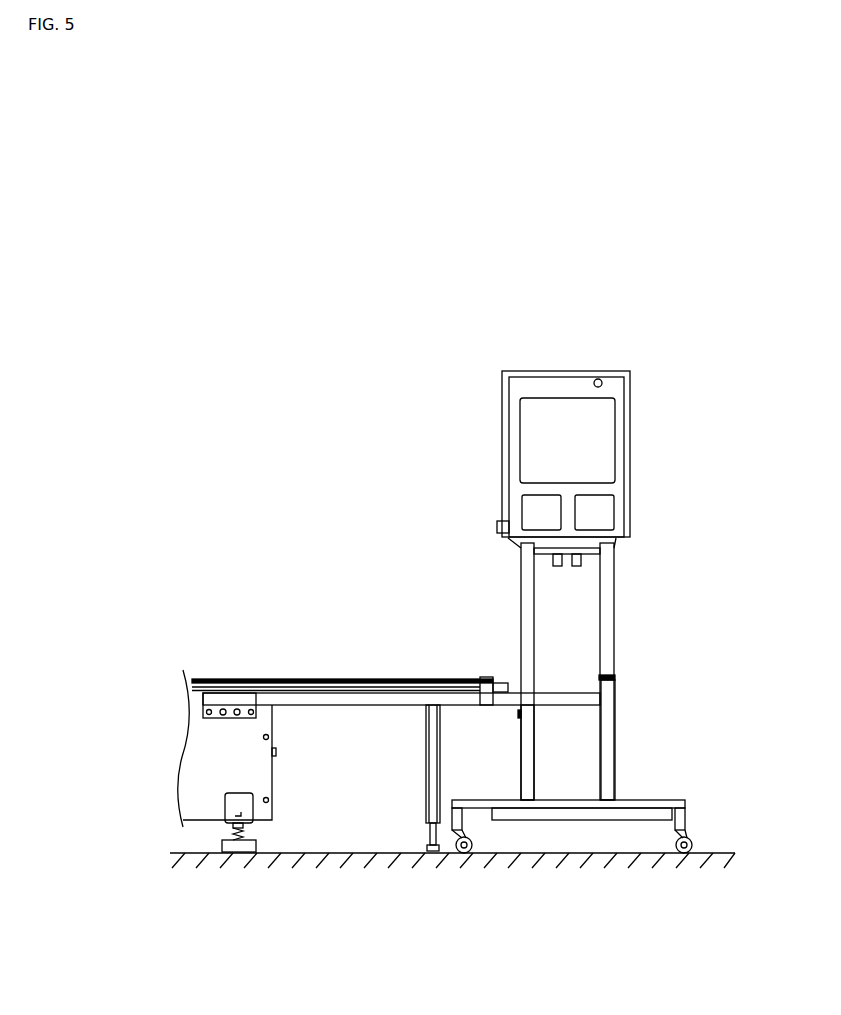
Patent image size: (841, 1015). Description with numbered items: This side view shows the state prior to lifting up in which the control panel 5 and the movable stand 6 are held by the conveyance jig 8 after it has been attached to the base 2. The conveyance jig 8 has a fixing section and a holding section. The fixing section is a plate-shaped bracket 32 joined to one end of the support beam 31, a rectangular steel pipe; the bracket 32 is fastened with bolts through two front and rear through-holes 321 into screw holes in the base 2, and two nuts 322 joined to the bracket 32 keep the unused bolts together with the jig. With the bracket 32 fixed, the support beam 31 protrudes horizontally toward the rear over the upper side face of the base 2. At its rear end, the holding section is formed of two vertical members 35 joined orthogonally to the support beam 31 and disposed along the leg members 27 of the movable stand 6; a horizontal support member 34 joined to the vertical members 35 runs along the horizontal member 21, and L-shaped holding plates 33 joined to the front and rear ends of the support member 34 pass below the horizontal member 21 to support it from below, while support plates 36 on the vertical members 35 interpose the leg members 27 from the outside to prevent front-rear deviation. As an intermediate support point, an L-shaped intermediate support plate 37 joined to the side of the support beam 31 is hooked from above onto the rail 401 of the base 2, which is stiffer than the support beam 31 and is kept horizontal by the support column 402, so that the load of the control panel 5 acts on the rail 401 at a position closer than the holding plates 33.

The control panel 5 is at (537, 444).
The leg members 27 is at (528, 594).
The movable stand 6 is at (615, 671).
The support plates 36 is at (616, 680).
The conveyance jig 8 is at (592, 807).
The vertical members 35 is at (538, 748).
The horizontal member 21 is at (592, 857).
The support member 34 is at (578, 822).
The holding plate 33 is at (657, 828).
The rail 401 is at (340, 678).
The intermediate support plate 37 is at (487, 677).
The support beam 31 is at (388, 706).
The support column 402 is at (423, 788).
The bracket 32 is at (273, 718).
The through-holes 321 is at (253, 713).
The nuts 322 is at (223, 718).
The base 2 is at (200, 808).